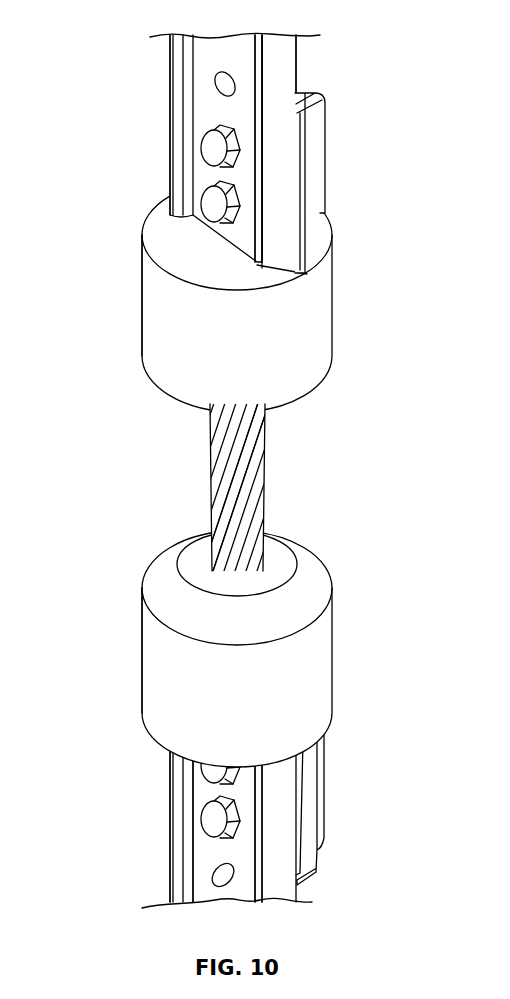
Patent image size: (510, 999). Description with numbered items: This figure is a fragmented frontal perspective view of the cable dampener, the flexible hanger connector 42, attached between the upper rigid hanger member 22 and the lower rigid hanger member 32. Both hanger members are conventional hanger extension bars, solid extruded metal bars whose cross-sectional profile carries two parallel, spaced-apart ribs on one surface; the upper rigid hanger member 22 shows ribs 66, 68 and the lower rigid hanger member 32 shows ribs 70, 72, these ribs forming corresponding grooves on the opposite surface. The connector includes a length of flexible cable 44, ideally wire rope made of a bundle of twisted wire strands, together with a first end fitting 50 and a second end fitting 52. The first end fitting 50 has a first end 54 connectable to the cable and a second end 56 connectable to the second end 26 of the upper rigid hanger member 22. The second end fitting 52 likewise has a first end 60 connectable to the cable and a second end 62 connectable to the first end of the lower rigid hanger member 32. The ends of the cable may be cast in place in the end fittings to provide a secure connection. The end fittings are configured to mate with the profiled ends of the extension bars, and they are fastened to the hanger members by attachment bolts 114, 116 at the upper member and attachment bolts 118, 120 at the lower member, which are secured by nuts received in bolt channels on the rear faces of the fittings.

The upper rigid hanger member 22 is at (200, 66).
The rib 66 is at (168, 91).
The rib 68 is at (273, 66).
The second end of first end fitting 56 is at (325, 118).
The attachment bolt 114 is at (210, 147).
The attachment bolt 116 is at (207, 203).
The second end of upper rigid hanger member 26 is at (280, 233).
The first end fitting 50 is at (320, 303).
The first end of first end fitting 54 is at (157, 330).
The flexible cable 44 is at (228, 493).
The flexible hanger connector 42 is at (270, 476).
The first end of second end fitting 60 is at (152, 674).
The second end fitting 52 is at (313, 684).
The attachment bolt 118 is at (208, 765).
The attachment bolt 120 is at (205, 810).
The rib 72 is at (258, 830).
The rib 70 is at (178, 853).
The second end of second end fitting 62 is at (282, 857).
The lower rigid hanger member 32 is at (200, 884).